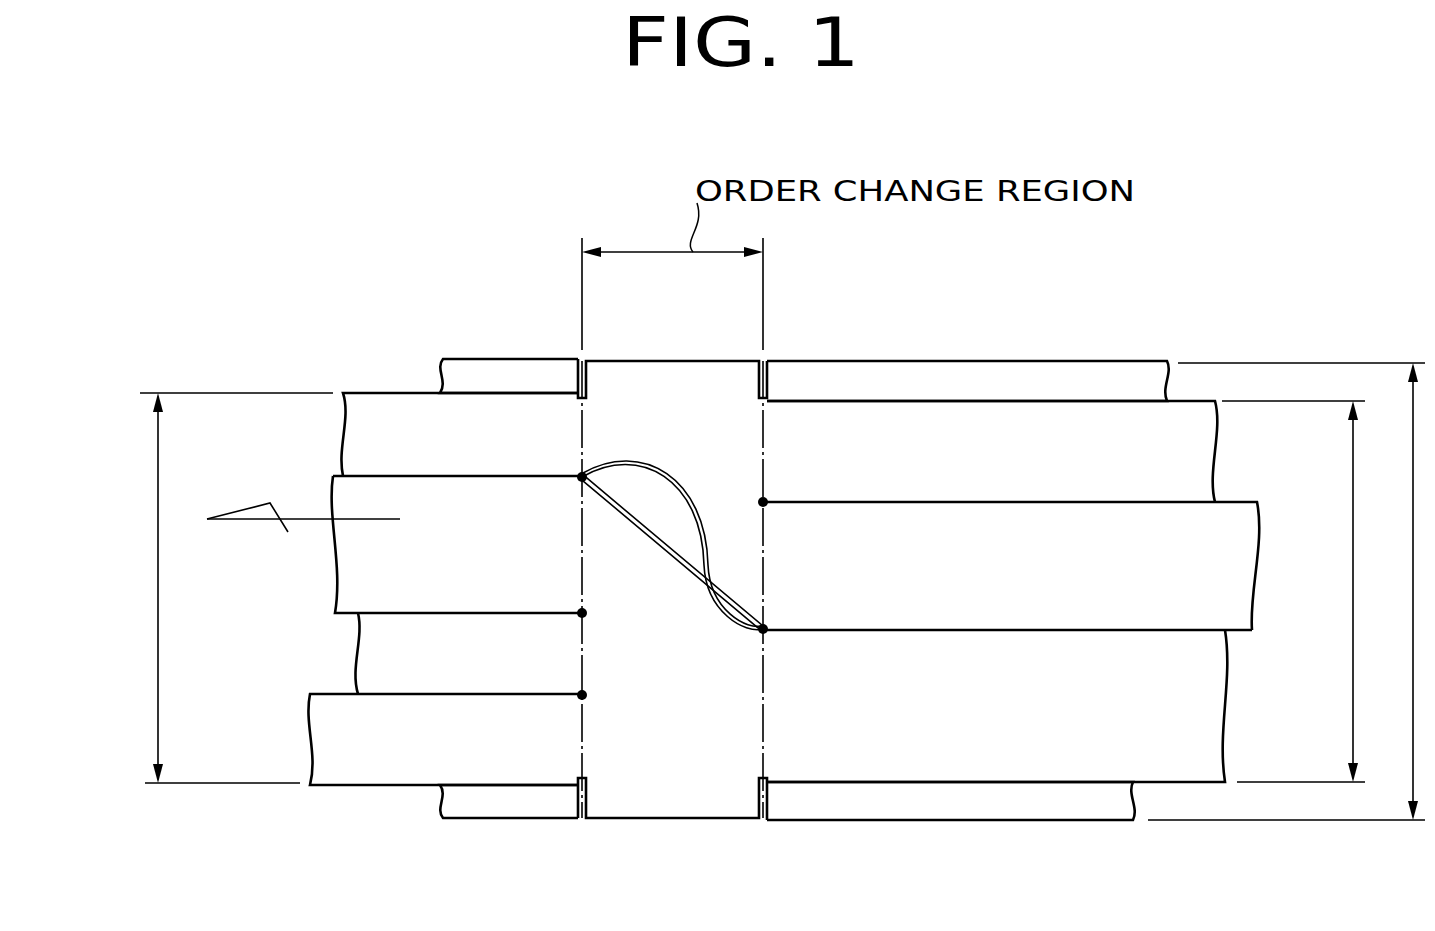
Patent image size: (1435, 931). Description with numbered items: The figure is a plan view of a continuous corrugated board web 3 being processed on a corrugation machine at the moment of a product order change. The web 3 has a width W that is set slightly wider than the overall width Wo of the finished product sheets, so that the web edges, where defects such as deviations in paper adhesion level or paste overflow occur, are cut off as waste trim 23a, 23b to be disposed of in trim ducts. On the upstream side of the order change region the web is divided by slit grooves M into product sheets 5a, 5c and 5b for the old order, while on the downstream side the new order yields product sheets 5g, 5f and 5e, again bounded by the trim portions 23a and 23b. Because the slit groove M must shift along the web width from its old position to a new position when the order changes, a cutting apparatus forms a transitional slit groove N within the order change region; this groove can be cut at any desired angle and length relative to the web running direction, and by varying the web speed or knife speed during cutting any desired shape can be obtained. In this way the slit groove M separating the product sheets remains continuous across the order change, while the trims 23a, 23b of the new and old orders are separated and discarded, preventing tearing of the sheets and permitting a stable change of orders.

The corrugated board web 3 is at (678, 798).
The product sheet 5a is at (355, 437).
The product sheet 5b is at (358, 655).
The product sheet 5c is at (345, 577).
The product sheet 5e is at (1207, 722).
The product sheet 5f is at (1243, 580).
The product sheet 5g is at (1193, 460).
The trim portion 23a is at (487, 368).
The trim portion 23b is at (967, 373).
The slit groove M is at (520, 475).
The transitional slit groove N is at (647, 485).
The overall width of the finished product sheets Wo is at (731, 588).
The width of the corrugated board web W is at (1286, 591).